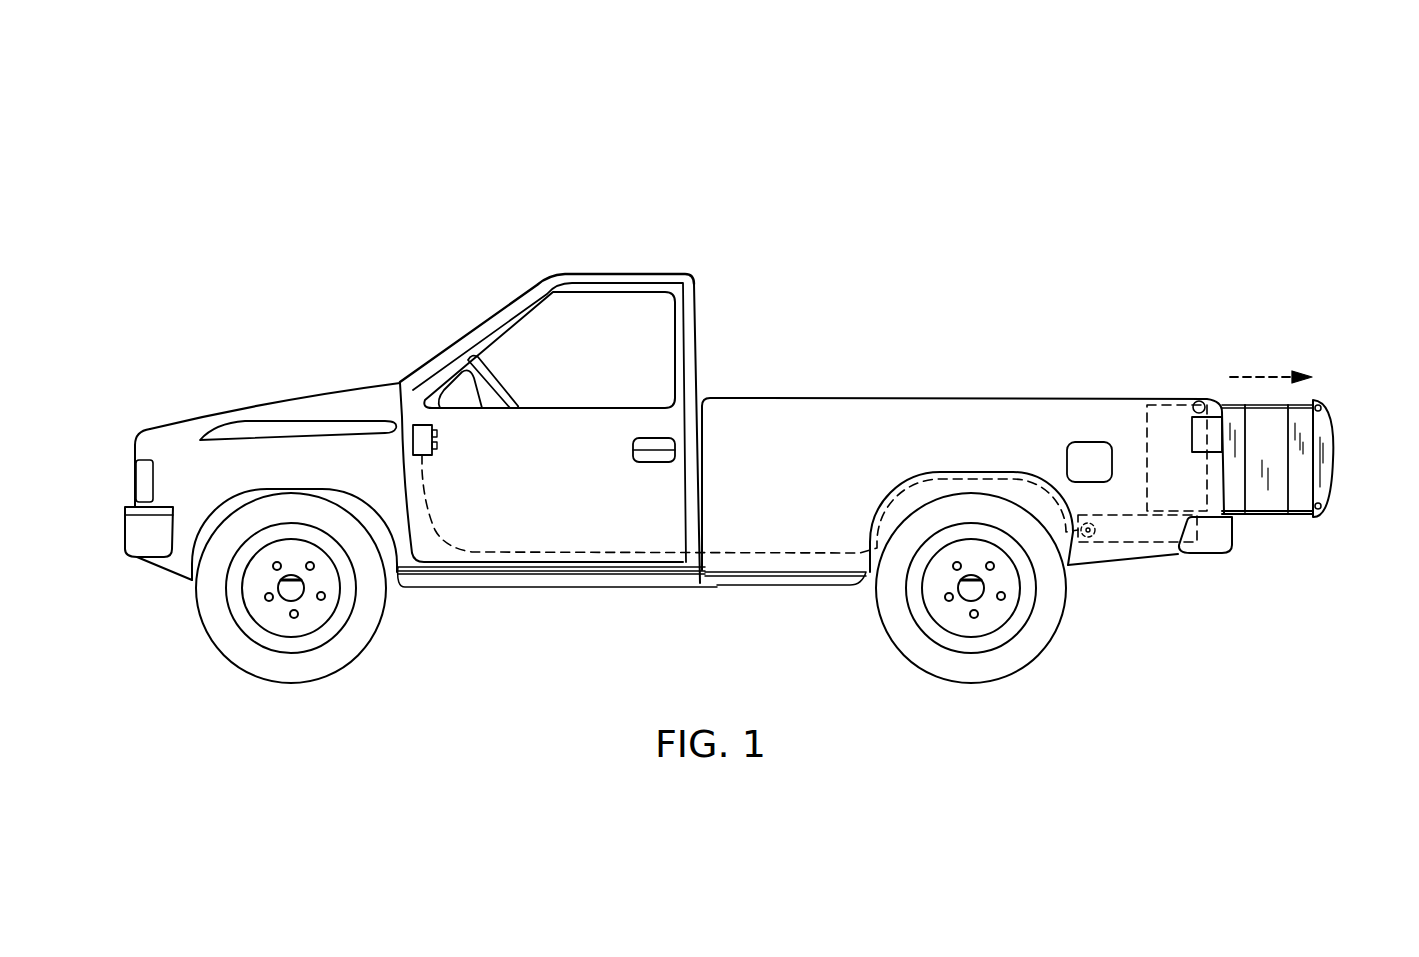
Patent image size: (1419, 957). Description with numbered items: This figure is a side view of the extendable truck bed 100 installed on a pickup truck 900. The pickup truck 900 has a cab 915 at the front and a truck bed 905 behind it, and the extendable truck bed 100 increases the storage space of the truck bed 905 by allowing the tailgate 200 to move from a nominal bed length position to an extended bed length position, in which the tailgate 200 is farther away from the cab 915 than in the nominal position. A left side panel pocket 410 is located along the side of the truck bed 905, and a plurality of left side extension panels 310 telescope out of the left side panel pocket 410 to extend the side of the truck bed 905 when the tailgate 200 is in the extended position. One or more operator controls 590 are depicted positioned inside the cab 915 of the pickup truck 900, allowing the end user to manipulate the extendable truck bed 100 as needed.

The extendable truck bed 100 is at (1262, 154).
The pickup truck 900 is at (177, 445).
The cab 915 is at (693, 262).
The truck bed 905 is at (1200, 333).
The operator controls 590 is at (413, 440).
The left side panel pocket 410 is at (1192, 403).
The tailgate 200 is at (1333, 460).
The left side extension panels 310 is at (1267, 503).